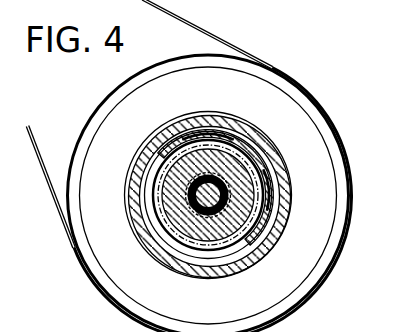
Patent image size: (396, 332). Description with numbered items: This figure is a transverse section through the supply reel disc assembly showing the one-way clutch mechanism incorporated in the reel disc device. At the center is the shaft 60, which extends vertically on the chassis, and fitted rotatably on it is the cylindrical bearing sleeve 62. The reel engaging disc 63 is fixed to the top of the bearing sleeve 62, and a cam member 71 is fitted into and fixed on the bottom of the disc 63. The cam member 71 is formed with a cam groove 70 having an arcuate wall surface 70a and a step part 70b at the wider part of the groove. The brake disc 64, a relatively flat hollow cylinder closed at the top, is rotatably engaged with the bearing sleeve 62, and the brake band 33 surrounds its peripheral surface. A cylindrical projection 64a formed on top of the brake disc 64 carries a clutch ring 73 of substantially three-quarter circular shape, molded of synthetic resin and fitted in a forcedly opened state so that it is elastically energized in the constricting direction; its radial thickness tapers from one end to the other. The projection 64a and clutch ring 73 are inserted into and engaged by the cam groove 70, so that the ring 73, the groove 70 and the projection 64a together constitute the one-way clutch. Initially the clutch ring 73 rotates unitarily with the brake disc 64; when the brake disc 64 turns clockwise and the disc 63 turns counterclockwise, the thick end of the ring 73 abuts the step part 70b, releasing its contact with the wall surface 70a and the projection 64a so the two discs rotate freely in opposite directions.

The brake band 33 is at (332, 113).
The shaft 60 is at (158, 263).
The bearing sleeve 62 is at (238, 278).
The reel engaging disc 63 is at (263, 253).
The brake disc 64 is at (320, 272).
The cylindrical projection 64a is at (155, 196).
The cam groove 70 is at (283, 231).
The arcuate wall surface 70a is at (215, 145).
The step part 70b is at (263, 193).
The cam member 71 is at (210, 265).
The clutch ring 73 is at (266, 192).